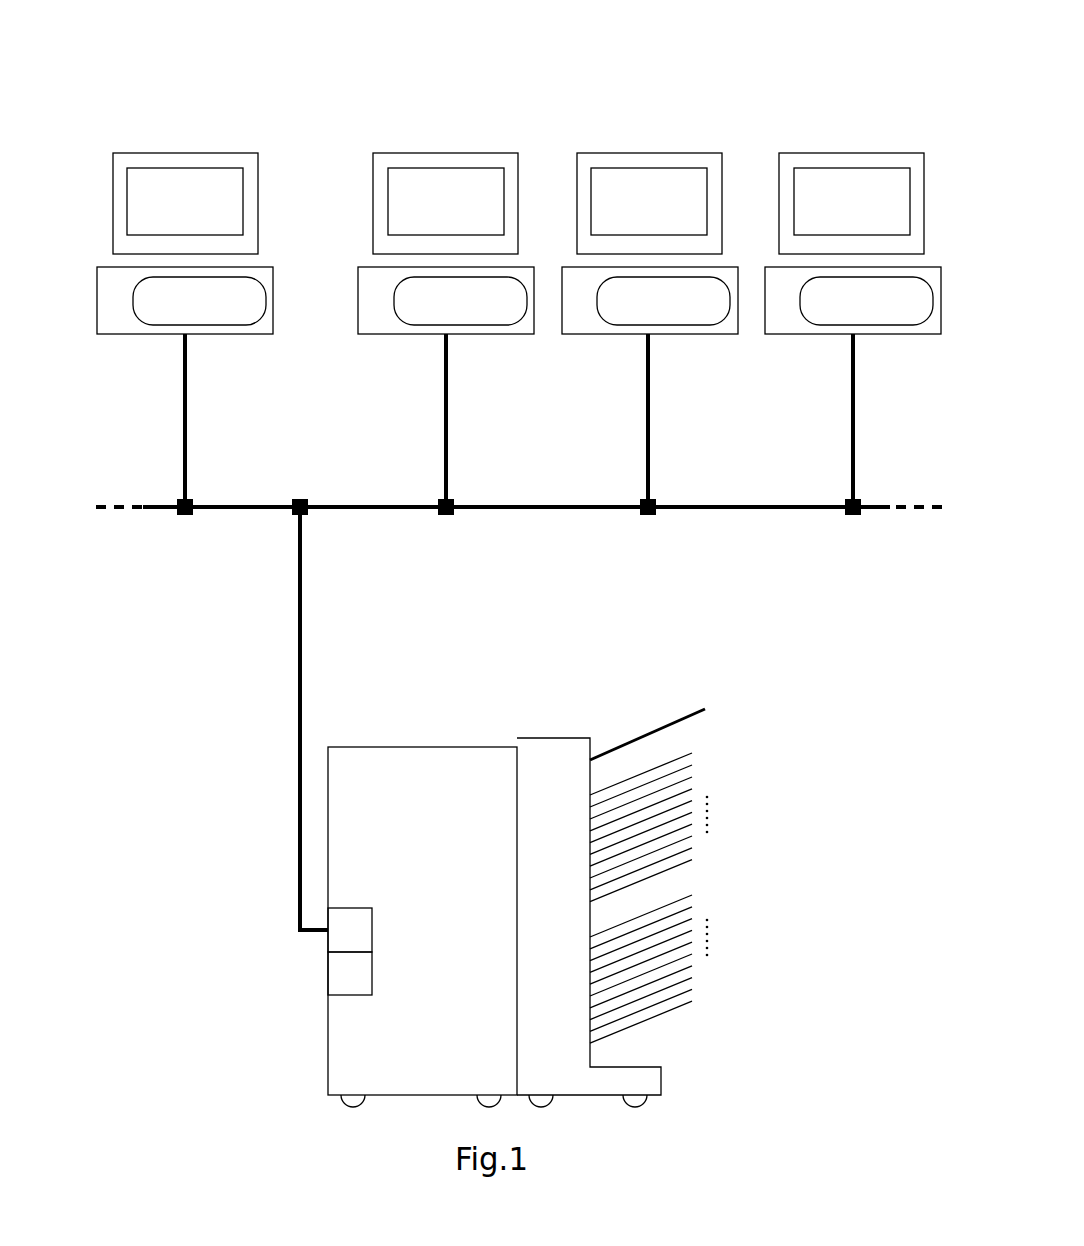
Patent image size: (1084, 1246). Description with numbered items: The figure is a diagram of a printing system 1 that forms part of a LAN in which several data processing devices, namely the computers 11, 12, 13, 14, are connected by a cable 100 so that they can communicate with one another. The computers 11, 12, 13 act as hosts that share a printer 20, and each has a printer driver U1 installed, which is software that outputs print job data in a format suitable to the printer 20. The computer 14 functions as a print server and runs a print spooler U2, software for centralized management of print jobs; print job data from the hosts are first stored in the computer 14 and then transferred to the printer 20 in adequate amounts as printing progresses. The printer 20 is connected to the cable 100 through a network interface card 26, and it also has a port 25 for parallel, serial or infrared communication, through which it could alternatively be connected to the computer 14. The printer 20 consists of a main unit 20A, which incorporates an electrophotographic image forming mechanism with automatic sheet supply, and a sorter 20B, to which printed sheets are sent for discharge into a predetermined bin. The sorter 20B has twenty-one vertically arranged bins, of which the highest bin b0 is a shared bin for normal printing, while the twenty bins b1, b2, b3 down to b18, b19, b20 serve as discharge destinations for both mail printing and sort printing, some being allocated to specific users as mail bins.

The printing system 1 is at (421, 35).
The computer 11 is at (860, 153).
The computer 12 is at (667, 153).
The computer 13 is at (463, 153).
The computer 14 is at (208, 153).
The printer driver U1 is at (470, 325).
The print spooler U2 is at (212, 325).
The cable 100 is at (330, 500).
The printer 20 is at (531, 864).
The main unit 20A is at (418, 747).
The sorter 20B is at (556, 738).
The port 25 is at (362, 978).
The network interface card 26 is at (362, 925).
The bin b0 is at (700, 712).
The bin b1 is at (694, 757).
The bin b2 is at (694, 775).
The bin b3 is at (694, 788).
The bin b18 is at (692, 976).
The bin b19 is at (690, 991).
The bin b20 is at (680, 1003).